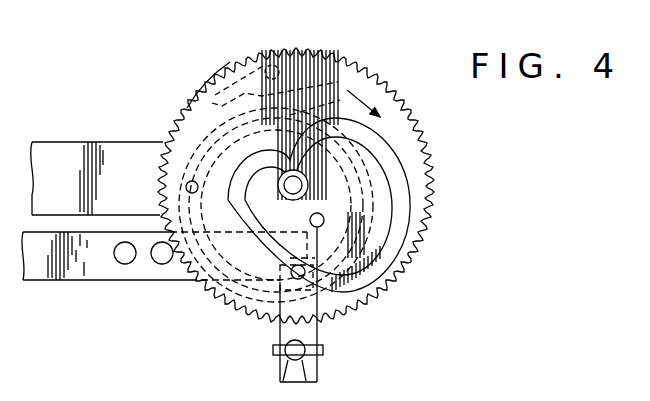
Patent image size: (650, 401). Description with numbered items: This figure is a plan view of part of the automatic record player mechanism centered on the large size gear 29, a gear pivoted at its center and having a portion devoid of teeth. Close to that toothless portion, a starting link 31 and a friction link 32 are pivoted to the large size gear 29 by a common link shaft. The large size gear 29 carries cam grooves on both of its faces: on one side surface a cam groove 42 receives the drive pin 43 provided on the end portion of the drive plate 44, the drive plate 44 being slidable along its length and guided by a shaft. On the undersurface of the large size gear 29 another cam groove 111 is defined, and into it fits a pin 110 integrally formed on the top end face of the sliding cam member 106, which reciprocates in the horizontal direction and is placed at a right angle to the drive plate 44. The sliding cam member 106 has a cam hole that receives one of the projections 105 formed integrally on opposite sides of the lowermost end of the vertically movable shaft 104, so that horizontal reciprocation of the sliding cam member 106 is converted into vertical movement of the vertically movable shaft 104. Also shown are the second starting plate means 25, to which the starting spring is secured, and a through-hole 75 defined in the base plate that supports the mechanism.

The second starting plate means 25 is at (95, 270).
The large size gear 29 is at (387, 100).
The starting link 31 is at (222, 74).
The friction link 32 is at (262, 62).
The cam groove 42 is at (189, 140).
The drive pin 43 is at (186, 187).
The drive plate 44 is at (116, 143).
The through-hole 75 is at (297, 341).
The vertically movable shaft 104 is at (306, 378).
The projections 105 is at (323, 349).
The sliding cam member 106 is at (270, 337).
The pin 110 is at (308, 294).
The cam groove 111 is at (398, 238).